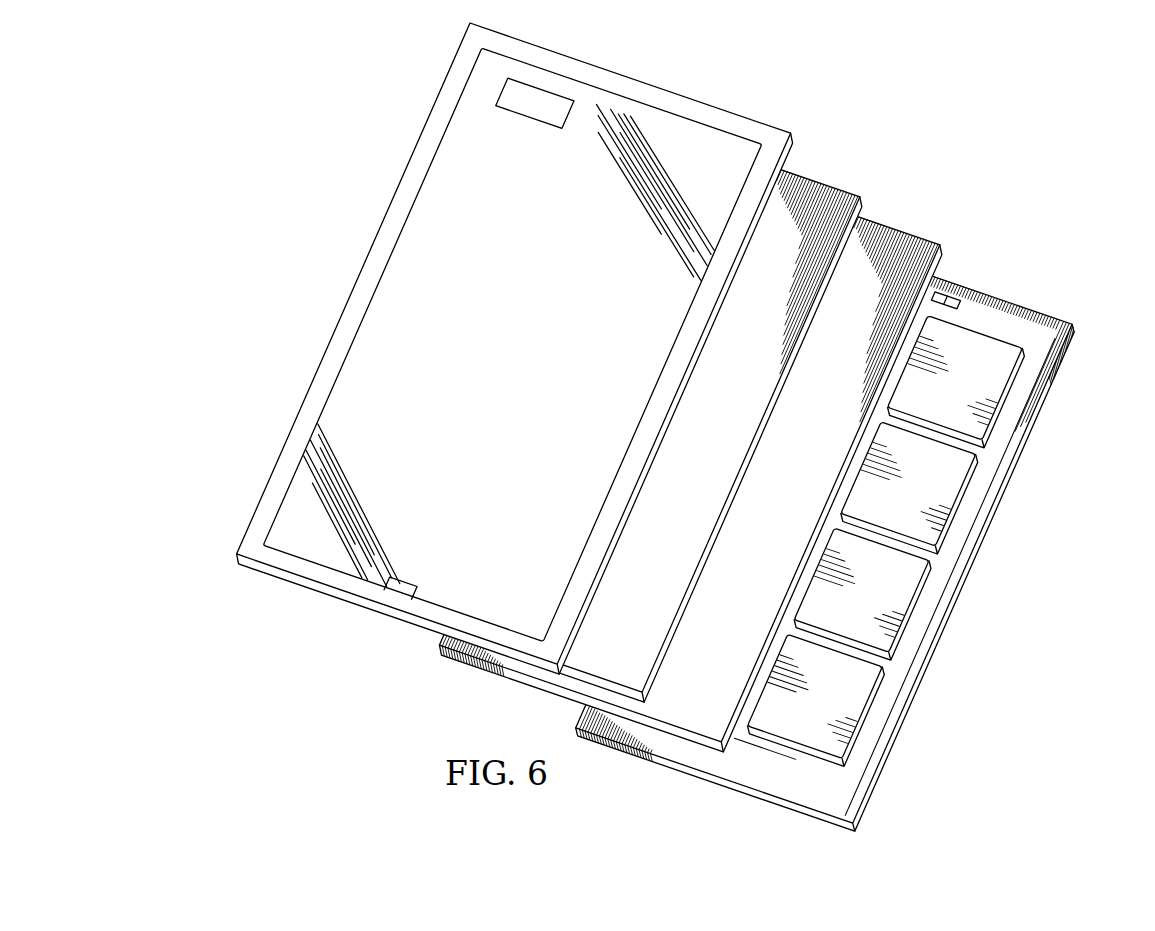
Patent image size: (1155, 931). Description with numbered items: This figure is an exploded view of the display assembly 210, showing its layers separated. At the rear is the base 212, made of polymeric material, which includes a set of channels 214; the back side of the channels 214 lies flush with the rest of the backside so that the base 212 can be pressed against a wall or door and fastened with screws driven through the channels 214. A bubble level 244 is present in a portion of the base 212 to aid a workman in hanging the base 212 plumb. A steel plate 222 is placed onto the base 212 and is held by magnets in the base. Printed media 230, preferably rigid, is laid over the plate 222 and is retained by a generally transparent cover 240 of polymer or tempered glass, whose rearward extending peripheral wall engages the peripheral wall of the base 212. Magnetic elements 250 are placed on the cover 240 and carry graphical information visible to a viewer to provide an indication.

The display assembly 210 is at (664, 427).
The base 212 is at (849, 530).
The channels 214 is at (970, 450).
The steel plate 222 is at (898, 222).
The printed media 230 is at (806, 178).
The cover 240 is at (697, 130).
The bubble level 244 is at (943, 292).
The magnetic elements 250 is at (527, 119).